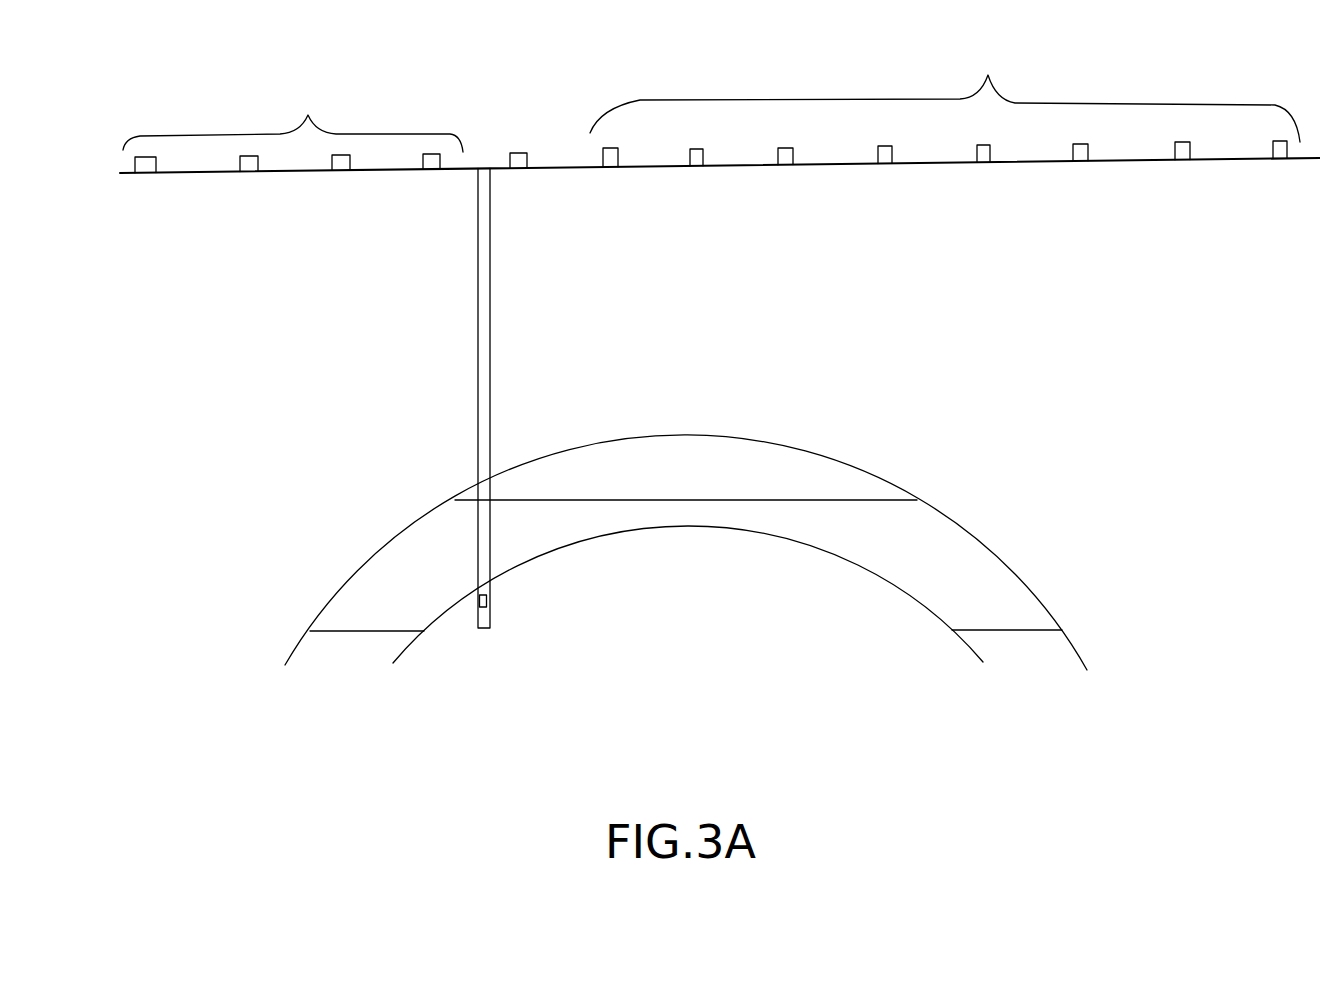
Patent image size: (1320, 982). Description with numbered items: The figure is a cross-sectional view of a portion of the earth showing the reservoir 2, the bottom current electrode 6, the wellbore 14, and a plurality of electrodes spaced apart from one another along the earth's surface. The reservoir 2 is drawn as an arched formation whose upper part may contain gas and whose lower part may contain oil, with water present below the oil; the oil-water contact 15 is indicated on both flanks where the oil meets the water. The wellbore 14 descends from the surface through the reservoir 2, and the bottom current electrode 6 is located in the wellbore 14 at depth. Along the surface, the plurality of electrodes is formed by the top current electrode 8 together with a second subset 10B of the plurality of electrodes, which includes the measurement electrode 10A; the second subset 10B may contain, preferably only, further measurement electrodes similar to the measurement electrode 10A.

The reservoir 2 is at (920, 538).
The bottom current electrode 6 is at (488, 600).
The top current electrode 8 is at (522, 150).
The measurement electrode 10A is at (612, 147).
The second subset of the plurality of electrodes 10B is at (711, 109).
The wellbore 14 is at (491, 335).
The oil-water contact 15 is at (328, 630).